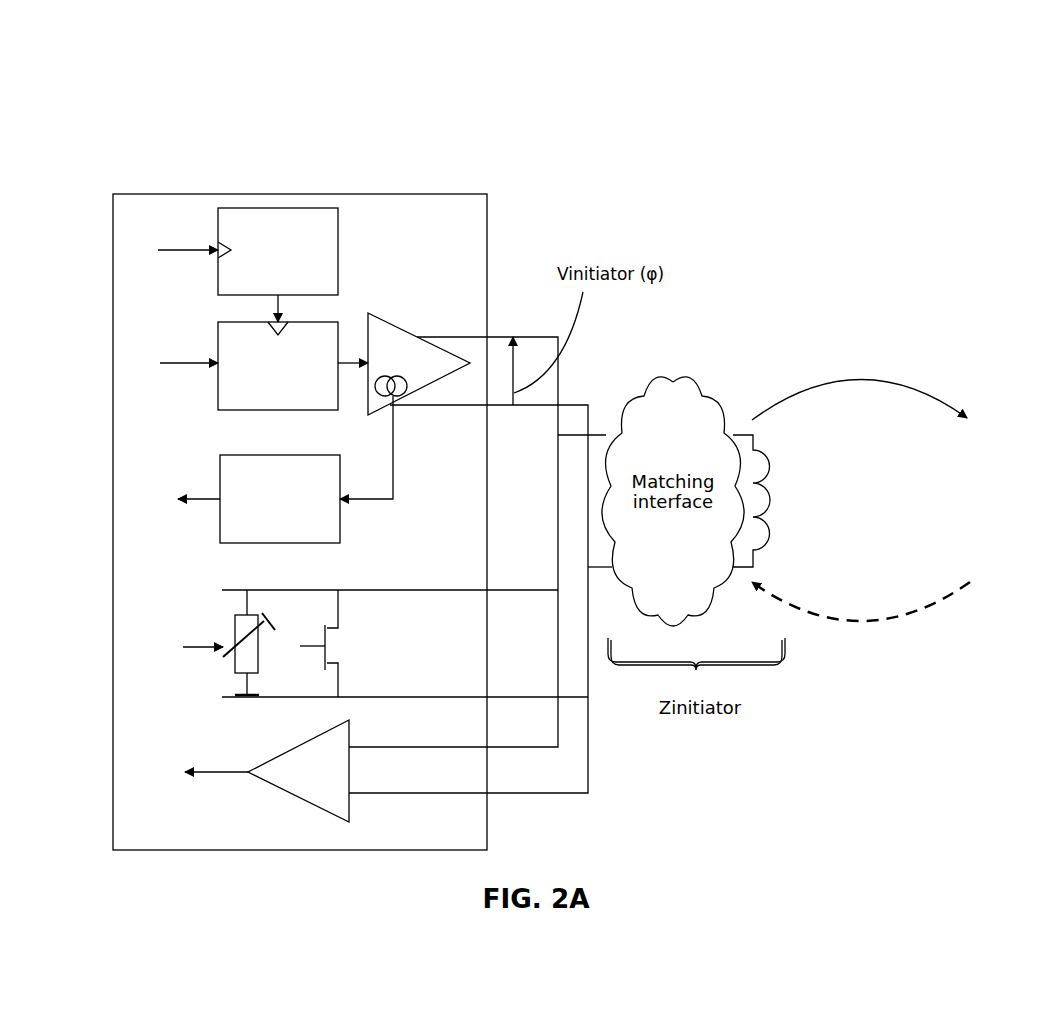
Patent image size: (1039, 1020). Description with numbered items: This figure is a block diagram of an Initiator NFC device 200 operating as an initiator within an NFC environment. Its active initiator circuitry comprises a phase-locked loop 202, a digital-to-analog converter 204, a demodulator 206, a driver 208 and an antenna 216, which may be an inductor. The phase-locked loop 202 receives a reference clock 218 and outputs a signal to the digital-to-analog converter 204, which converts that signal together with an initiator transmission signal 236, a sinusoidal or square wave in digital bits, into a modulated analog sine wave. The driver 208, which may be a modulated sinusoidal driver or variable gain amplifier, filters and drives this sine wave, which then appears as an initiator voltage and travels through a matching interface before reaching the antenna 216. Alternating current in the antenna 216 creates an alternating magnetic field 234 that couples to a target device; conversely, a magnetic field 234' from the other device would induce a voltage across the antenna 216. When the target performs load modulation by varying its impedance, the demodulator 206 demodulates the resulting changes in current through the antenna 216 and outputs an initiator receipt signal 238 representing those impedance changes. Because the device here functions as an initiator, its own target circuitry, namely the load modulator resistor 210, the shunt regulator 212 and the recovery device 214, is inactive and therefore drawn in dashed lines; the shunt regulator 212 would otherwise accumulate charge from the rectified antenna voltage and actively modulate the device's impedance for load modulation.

The Initiator NFC device 200 is at (230, 113).
The phase-locked loop (PLL) 202 is at (278, 251).
The digital-to-analog converter (DAC) 204 is at (278, 352).
The demodulator 206 is at (280, 499).
The driver 208 is at (404, 364).
The load modulator resistor 210 is at (228, 667).
The shunt regulator 212 is at (347, 645).
The recovery device 214 is at (267, 771).
The antenna 216 is at (790, 496).
The reference clock 218 is at (168, 264).
The magnetic field 234 is at (859, 386).
The magnetic field 234' is at (861, 615).
The initiator transmission signal 236 is at (168, 363).
The initiator receipt signal 238 is at (174, 500).